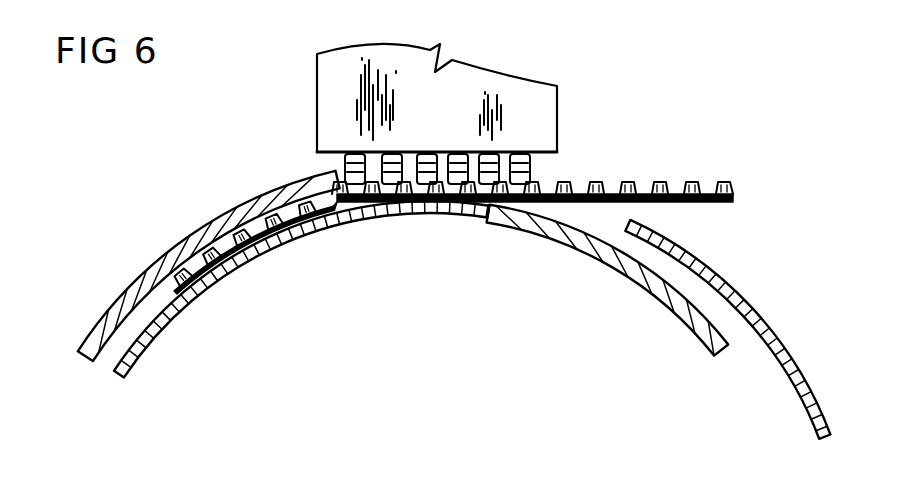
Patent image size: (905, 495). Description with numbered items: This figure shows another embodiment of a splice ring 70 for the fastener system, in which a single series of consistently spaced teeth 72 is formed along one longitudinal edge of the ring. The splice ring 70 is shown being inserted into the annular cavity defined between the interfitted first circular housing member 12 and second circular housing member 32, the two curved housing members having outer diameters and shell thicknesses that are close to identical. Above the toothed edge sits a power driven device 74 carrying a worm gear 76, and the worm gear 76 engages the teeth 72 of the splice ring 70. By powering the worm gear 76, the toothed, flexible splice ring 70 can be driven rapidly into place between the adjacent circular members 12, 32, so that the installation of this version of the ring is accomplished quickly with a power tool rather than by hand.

The first circular housing member 12 is at (693, 322).
The second circular housing member 32 is at (172, 254).
The splice ring 70 is at (733, 191).
The teeth 72 is at (597, 184).
The power driven device 74 is at (322, 97).
The worm gear 76 is at (496, 156).